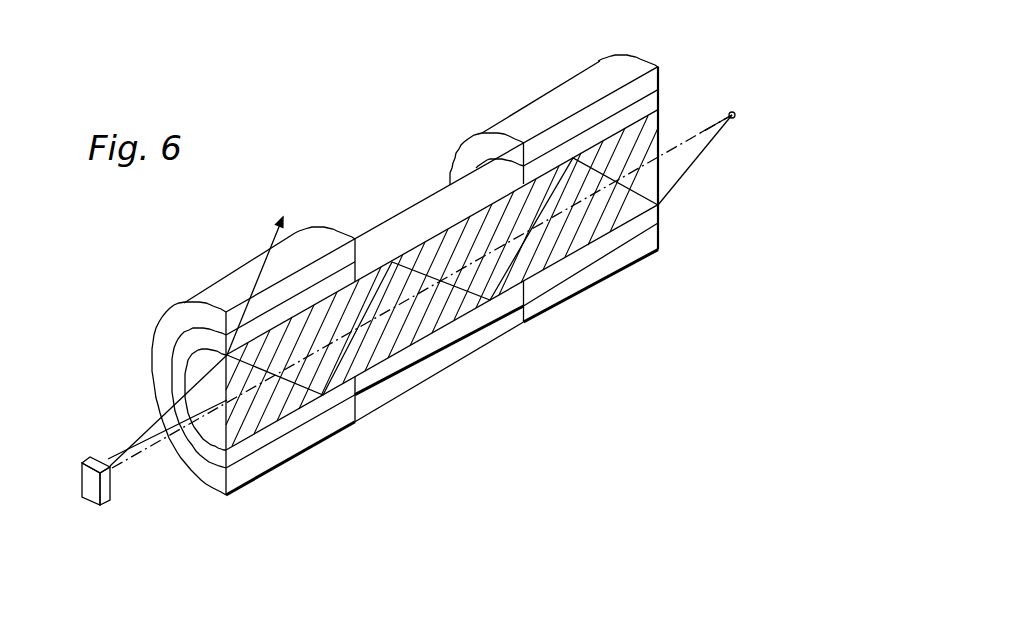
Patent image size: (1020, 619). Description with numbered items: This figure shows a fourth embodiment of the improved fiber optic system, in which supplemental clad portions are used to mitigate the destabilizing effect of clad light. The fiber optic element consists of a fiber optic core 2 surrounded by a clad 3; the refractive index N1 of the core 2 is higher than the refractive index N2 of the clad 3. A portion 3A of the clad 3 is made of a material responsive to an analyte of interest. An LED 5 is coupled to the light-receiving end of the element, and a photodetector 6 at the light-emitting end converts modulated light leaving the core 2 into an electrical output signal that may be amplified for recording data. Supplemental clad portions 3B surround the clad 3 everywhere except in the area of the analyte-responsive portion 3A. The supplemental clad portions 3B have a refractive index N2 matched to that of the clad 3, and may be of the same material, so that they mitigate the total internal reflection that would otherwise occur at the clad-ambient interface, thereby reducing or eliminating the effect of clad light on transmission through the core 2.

The fiber optic core 2 is at (594, 244).
The clad 3 is at (663, 91).
The analyte-responsive portion of clad 3A is at (454, 194).
The supplemental clad portions 3B is at (559, 90).
The LED 5 is at (106, 512).
The photodetector 6 is at (736, 113).